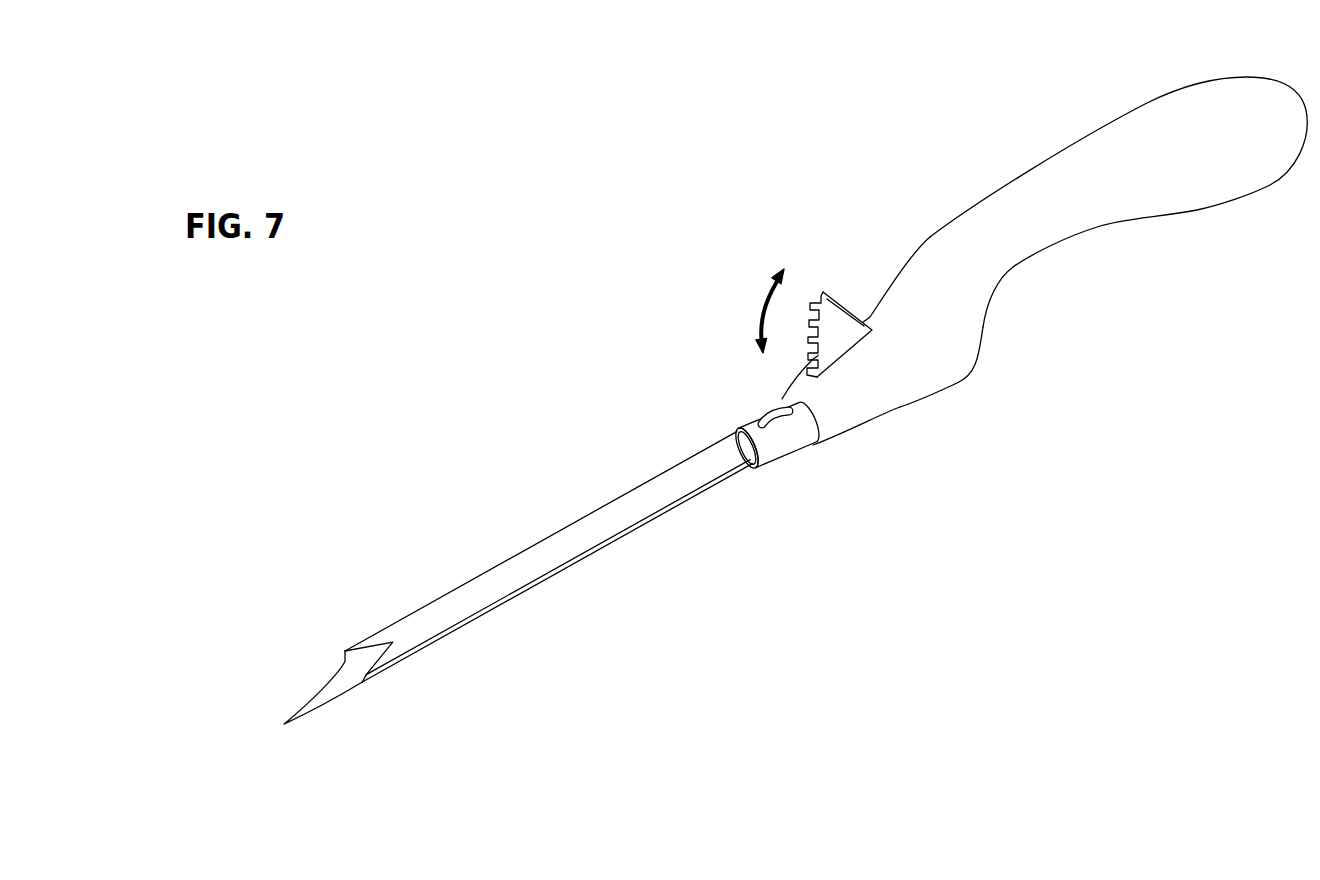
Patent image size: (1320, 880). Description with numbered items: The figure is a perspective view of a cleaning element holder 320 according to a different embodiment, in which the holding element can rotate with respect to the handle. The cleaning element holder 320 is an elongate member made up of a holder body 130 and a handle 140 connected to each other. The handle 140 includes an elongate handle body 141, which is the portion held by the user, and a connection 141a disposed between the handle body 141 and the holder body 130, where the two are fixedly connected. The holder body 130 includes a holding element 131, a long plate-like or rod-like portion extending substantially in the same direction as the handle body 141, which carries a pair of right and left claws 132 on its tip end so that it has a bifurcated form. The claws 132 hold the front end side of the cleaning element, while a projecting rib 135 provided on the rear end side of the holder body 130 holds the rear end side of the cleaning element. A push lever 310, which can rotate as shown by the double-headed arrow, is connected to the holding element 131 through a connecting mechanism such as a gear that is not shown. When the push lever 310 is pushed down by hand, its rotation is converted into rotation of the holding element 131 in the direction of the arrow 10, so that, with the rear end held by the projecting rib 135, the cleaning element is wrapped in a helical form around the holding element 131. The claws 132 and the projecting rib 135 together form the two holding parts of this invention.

The arrow 10 is at (678, 457).
The holder body 130 is at (575, 470).
The holding element 131 is at (471, 590).
The claws 132 is at (302, 718).
The projecting rib 135 is at (773, 412).
The handle 140 is at (925, 198).
The handle body 141 is at (1018, 235).
The connection 141a is at (935, 365).
The push lever 310 is at (834, 292).
The cleaning element holder 320 is at (912, 503).